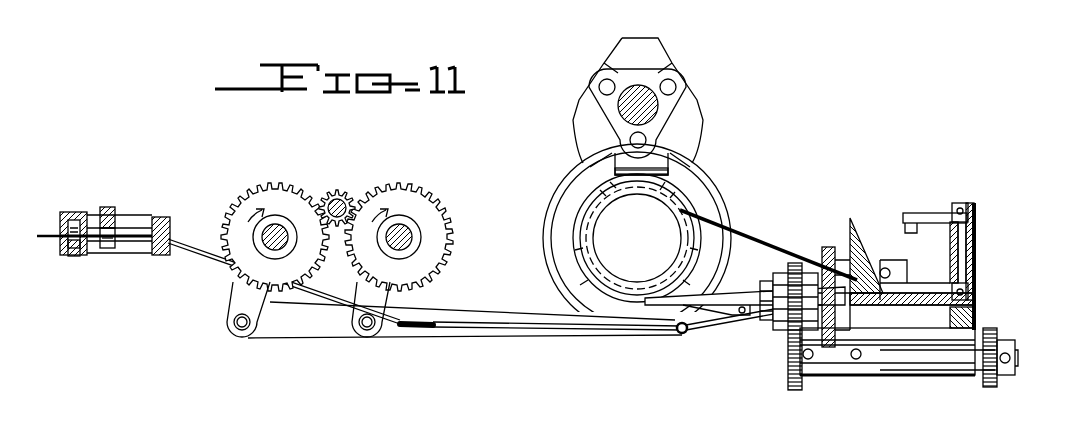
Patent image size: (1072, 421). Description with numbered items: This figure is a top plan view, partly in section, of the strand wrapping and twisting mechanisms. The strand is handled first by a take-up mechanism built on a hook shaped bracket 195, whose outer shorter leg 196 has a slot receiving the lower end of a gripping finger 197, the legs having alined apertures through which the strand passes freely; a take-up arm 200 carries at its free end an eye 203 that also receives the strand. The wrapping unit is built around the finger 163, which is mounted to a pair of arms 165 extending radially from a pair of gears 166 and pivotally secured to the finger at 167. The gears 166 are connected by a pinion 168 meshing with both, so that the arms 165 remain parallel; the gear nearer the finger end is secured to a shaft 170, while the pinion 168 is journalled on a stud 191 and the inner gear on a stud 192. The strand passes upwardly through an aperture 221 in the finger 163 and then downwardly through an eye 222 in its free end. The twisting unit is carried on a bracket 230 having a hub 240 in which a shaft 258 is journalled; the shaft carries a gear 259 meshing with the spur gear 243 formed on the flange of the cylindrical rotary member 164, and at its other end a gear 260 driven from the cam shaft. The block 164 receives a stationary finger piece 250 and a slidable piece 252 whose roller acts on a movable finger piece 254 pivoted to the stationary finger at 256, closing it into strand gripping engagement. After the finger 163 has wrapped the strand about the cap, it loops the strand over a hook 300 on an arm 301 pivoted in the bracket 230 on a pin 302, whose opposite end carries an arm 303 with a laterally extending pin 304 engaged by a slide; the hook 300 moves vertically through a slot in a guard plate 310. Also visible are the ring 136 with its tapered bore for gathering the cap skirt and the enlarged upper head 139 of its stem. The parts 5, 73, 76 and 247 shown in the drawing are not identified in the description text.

The rod 5 is at (208, 258).
The hub shaft 73 is at (652, 112).
The wheel 76 is at (700, 180).
The ring 136 is at (706, 210).
The enlarged upper head 139 is at (697, 81).
The finger 163 is at (515, 339).
The rotary member 164 is at (788, 272).
The arms 165 is at (234, 297).
The gears 166 is at (262, 188).
The pivot 167 is at (240, 330).
The pinion 168 is at (346, 194).
The shaft 170 is at (280, 226).
The stud 191 is at (334, 198).
The stud 192 is at (409, 235).
The hook shaped bracket 195 is at (165, 217).
The outer shorter leg 196 is at (76, 212).
The gripping finger 197 is at (74, 256).
The take-up arm 200 is at (112, 207).
The eye 203 is at (108, 248).
The aperture 221 is at (410, 329).
The eye 222 is at (682, 334).
The bracket 230 is at (977, 270).
The hub 240 is at (922, 376).
The spur gear 243 is at (764, 332).
The collar 247 is at (782, 338).
The stationary finger piece 250 is at (737, 290).
The piece 252 is at (828, 258).
The movable finger piece 254 is at (716, 313).
The pivot 256 is at (742, 313).
The shaft 258 is at (1019, 358).
The gear 259 is at (795, 391).
The gear 260 is at (991, 328).
The hook 300 is at (912, 312).
The arm 301 is at (925, 306).
The pin 302 is at (977, 241).
The arm 303 is at (927, 213).
The laterally extending pin 304 is at (935, 252).
The guard plate 310 is at (858, 240).